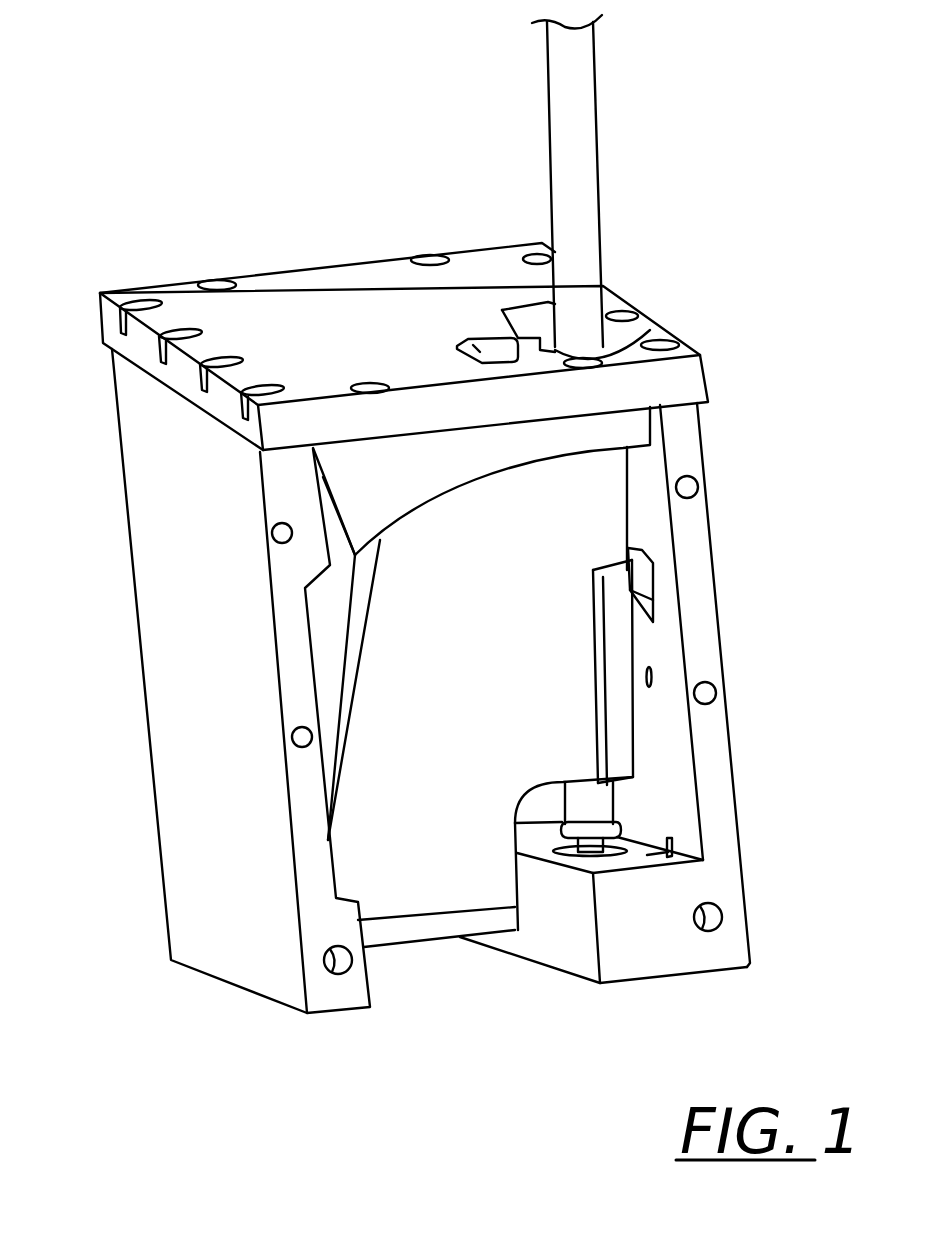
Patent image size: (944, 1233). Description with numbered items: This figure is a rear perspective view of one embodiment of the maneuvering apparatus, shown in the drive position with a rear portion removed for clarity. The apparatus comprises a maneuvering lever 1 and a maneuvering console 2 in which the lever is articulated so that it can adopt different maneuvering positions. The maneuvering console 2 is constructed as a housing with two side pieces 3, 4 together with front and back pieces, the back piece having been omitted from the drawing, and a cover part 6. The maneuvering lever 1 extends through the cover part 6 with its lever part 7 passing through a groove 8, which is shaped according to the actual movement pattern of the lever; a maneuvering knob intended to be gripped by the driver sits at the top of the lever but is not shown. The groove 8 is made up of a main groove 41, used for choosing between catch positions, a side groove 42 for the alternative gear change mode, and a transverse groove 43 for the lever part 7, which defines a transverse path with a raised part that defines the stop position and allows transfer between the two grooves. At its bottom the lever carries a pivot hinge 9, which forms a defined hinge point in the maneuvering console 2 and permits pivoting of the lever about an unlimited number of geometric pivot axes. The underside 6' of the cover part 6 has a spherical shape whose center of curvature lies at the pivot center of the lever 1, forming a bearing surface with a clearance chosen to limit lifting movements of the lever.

The maneuvering lever 1 is at (600, 228).
The maneuvering console 2 is at (155, 820).
The side piece 3 is at (190, 698).
The side piece 4 is at (698, 582).
The cover part 6 is at (433, 298).
The underside of the cover part 6' is at (215, 644).
The lever part 7 is at (583, 148).
The groove 8 is at (539, 324).
The pivot hinge 9 is at (625, 836).
The main groove 41 is at (510, 307).
The side groove 42 is at (478, 350).
The transverse groove 43 is at (652, 332).